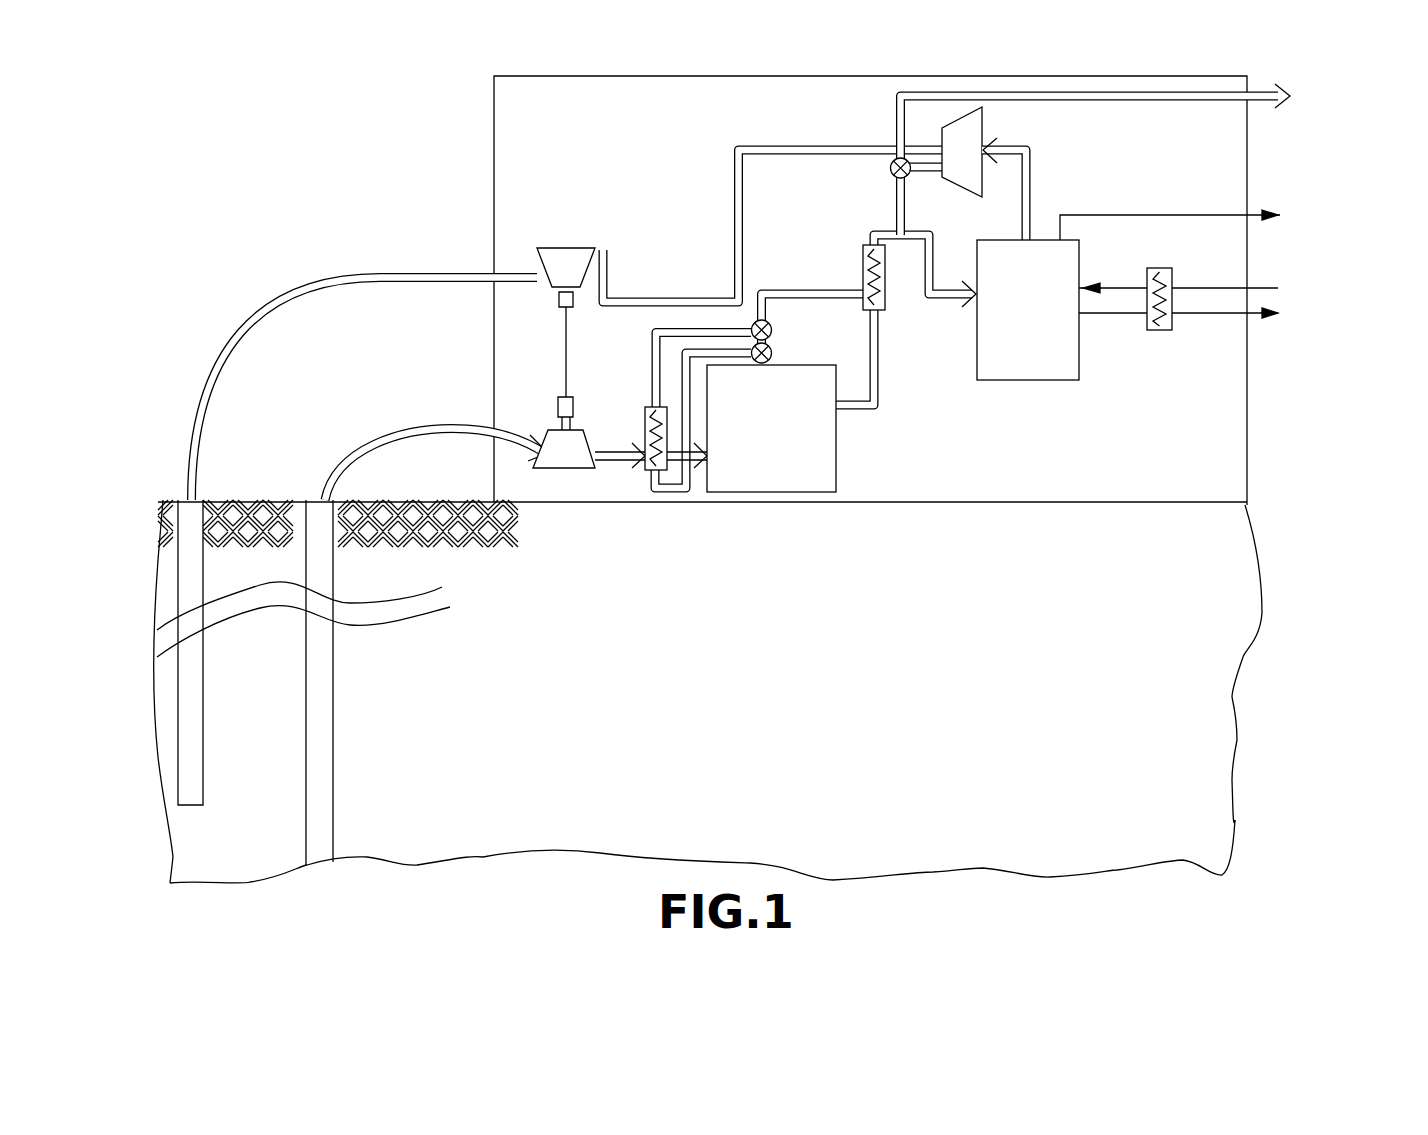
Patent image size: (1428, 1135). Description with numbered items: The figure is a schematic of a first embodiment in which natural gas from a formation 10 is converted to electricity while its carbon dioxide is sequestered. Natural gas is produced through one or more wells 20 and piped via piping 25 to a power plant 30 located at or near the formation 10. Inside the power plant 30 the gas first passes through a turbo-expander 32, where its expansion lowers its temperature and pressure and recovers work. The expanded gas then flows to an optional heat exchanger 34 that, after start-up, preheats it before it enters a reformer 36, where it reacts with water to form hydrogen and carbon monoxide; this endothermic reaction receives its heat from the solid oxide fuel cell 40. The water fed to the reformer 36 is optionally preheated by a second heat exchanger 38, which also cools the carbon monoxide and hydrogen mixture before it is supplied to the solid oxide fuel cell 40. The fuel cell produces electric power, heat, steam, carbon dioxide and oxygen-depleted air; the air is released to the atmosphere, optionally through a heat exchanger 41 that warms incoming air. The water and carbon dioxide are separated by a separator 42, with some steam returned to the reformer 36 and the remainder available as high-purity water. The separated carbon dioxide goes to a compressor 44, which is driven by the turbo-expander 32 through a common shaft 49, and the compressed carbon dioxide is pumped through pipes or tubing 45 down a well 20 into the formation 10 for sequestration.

The formation 10 is at (480, 692).
The wells 20 is at (275, 500).
The piping 25 is at (410, 437).
The power plant 30 is at (494, 225).
The turbo-expander 32 is at (588, 443).
The heat exchanger 34 is at (645, 411).
The reformer 36 is at (836, 477).
The second heat exchanger 38 is at (862, 257).
The solid oxide fuel cell 40 is at (1080, 272).
The heat exchanger 41 is at (1163, 268).
The separator 42 is at (984, 177).
The compressor 44 is at (613, 264).
The pipes or tubing 45 is at (245, 355).
The common shaft 49 is at (567, 345).